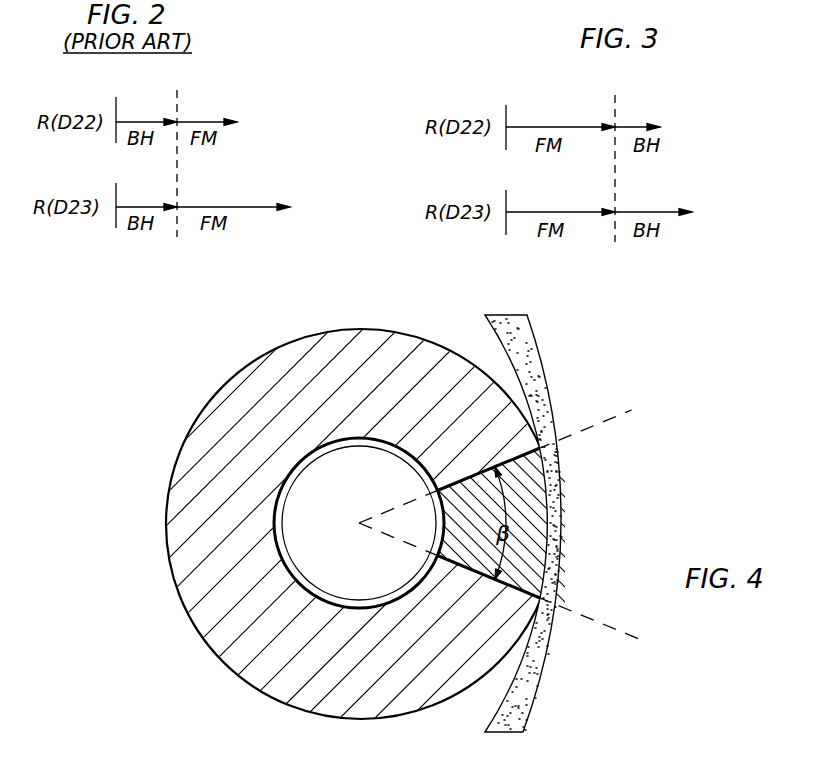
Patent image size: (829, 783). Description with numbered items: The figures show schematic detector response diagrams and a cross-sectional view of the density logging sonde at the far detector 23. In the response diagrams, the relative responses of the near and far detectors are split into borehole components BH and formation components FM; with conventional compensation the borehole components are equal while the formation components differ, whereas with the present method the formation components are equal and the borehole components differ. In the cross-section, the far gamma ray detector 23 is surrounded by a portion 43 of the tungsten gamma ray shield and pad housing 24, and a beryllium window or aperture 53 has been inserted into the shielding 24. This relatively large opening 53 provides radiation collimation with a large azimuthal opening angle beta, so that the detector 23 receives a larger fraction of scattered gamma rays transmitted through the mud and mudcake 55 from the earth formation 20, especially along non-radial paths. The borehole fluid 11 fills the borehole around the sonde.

The borehole fluid 11 is at (404, 525).
The earth formations 20 is at (546, 526).
The far gamma ray detector 23 is at (367, 496).
The gamma ray shield and pad housing 24 is at (197, 416).
The shielding portion 43 is at (192, 511).
The aperture 53 is at (530, 519).
The mud and mudcake 55 is at (535, 675).